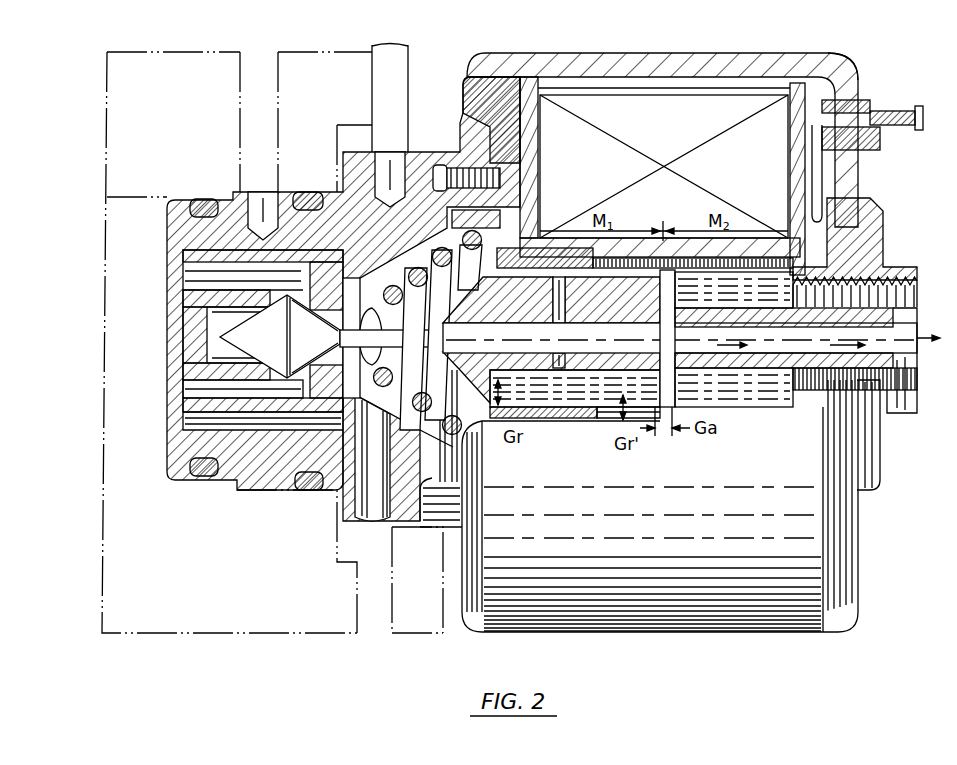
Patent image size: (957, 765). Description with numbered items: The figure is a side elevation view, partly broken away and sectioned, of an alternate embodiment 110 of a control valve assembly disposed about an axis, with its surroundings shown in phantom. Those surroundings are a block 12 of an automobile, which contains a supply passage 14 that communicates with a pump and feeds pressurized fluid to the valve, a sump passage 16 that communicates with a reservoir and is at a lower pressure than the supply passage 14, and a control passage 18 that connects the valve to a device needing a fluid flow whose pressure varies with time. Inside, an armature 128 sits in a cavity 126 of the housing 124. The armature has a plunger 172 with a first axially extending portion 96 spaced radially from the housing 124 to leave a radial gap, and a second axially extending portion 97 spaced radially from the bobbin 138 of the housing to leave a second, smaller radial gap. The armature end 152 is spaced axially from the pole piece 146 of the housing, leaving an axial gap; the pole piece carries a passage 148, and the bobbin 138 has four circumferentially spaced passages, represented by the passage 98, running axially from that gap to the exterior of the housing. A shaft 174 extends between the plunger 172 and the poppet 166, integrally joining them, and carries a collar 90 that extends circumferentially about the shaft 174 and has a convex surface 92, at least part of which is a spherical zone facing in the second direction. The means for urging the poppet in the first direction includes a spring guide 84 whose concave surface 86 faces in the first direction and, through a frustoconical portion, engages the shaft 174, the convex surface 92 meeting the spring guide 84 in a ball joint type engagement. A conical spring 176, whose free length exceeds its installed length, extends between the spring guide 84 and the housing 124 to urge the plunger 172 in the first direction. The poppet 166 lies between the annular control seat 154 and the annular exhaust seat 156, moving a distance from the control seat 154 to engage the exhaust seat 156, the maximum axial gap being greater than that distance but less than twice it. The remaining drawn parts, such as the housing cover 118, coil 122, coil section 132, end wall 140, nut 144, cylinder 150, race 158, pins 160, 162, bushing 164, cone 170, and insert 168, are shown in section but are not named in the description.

The block 12 is at (158, 52).
The supply passage 14 is at (262, 60).
The sump passage 16 is at (375, 622).
The control passage 18 is at (107, 197).
The spring guide 84 is at (380, 292).
The concave surface 86 is at (362, 318).
The collar 90 is at (365, 333).
The convex surface 92 is at (354, 338).
The first axially extending portion 96 is at (498, 300).
The second axially extending portion 97 is at (612, 300).
The passage 98 is at (767, 268).
The alternate embodiment of the control valve assembly 110 is at (688, 34).
The housing cover 118 is at (522, 53).
The coil winding 122 is at (652, 95).
The housing 124 is at (657, 195).
The cavity 126 is at (470, 428).
The armature 128 is at (543, 386).
The first coil section 132 is at (572, 250).
The bobbin 138 is at (632, 250).
The housing end wall 140 is at (728, 54).
The retaining nut 144 is at (880, 216).
The pole piece 146 is at (758, 307).
The passage 148 is at (772, 350).
The plunger cylinder 150 is at (678, 299).
The end 152 is at (551, 377).
The annular control seat 154 is at (177, 305).
The annular exhaust seat 156 is at (322, 392).
The bearing race 158 is at (300, 294).
The locating pin 160 is at (265, 200).
The locating pin 162 is at (373, 512).
The bearing bushing 164 is at (183, 396).
The poppet 166 is at (280, 336).
The conical head 170 is at (314, 336).
The bearing insert 168 is at (226, 335).
The plunger 172 is at (602, 313).
The shaft 174 is at (691, 338).
The conical spring 176 is at (450, 449).